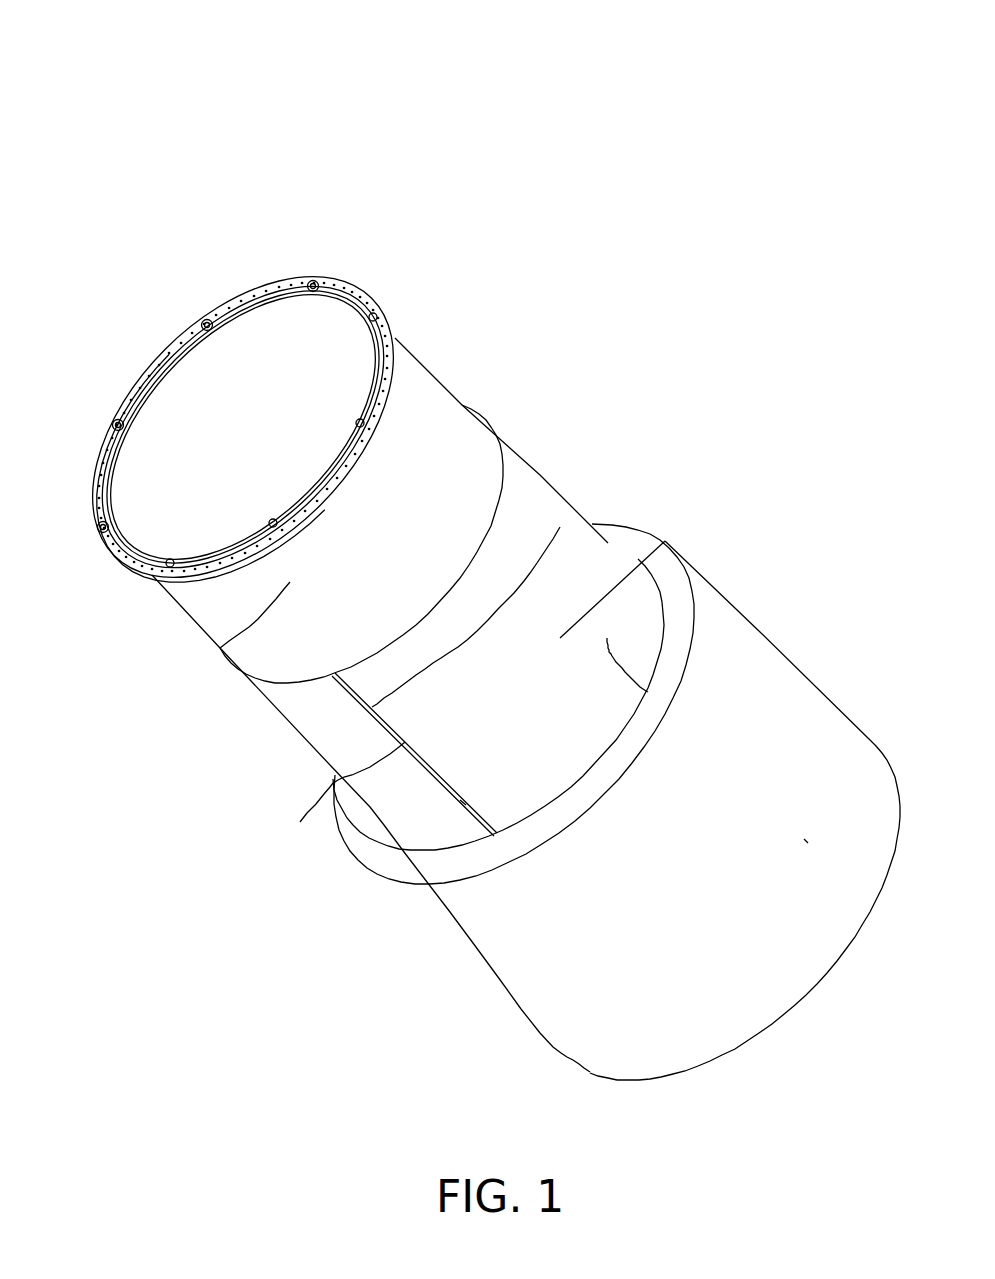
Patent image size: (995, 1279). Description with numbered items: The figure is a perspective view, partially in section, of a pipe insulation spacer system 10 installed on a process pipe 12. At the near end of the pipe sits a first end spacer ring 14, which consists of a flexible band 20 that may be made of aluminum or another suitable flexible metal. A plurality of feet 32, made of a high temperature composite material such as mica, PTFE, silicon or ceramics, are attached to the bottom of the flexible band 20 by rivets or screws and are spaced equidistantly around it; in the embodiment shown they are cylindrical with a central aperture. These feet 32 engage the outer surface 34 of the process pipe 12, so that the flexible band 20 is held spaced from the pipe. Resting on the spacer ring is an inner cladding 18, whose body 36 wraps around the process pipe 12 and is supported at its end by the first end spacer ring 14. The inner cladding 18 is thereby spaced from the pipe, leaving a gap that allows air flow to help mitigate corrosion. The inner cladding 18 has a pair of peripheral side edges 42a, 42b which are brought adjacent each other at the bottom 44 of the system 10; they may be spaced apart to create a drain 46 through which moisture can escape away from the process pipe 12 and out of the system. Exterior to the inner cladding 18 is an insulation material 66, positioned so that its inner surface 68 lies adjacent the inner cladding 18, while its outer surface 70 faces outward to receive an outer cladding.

The pipe insulation spacer system 10 is at (713, 80).
The process pipe 12 is at (428, 382).
The first end spacer ring 14 is at (343, 283).
The inner cladding 18 is at (320, 735).
The flexible band 20 is at (93, 470).
The feet 32 is at (117, 415).
The outer surface 34 is at (220, 648).
The body 36 is at (667, 545).
The peripheral side edge 42a is at (560, 527).
The peripheral side edge 42b is at (300, 822).
The bottom 44 is at (440, 783).
The drain 46 is at (460, 800).
The insulation material 66 is at (753, 720).
The inner surface 68 is at (607, 638).
The outer surface 70 is at (808, 843).